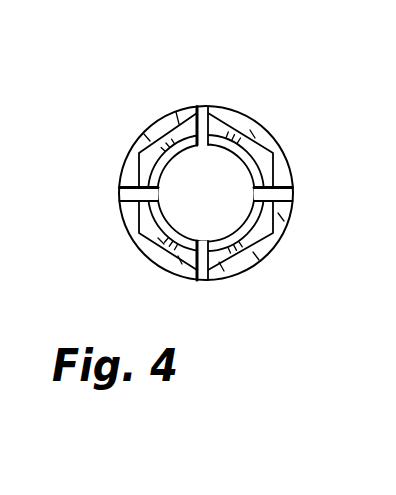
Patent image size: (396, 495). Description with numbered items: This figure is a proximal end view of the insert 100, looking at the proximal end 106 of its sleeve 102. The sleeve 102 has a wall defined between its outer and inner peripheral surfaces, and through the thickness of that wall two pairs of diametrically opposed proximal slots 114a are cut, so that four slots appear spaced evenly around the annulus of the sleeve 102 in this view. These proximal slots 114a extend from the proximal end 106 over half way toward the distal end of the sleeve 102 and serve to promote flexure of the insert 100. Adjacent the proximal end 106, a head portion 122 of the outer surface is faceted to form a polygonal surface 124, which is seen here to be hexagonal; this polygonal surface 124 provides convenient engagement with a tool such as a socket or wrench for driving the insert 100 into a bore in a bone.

The insert 100 is at (122, 72).
The sleeve 102 is at (280, 248).
The proximal end 106 is at (246, 150).
The proximal slots 114a is at (205, 104).
The head portion 122 is at (166, 113).
The polygonal surface 124 is at (222, 119).